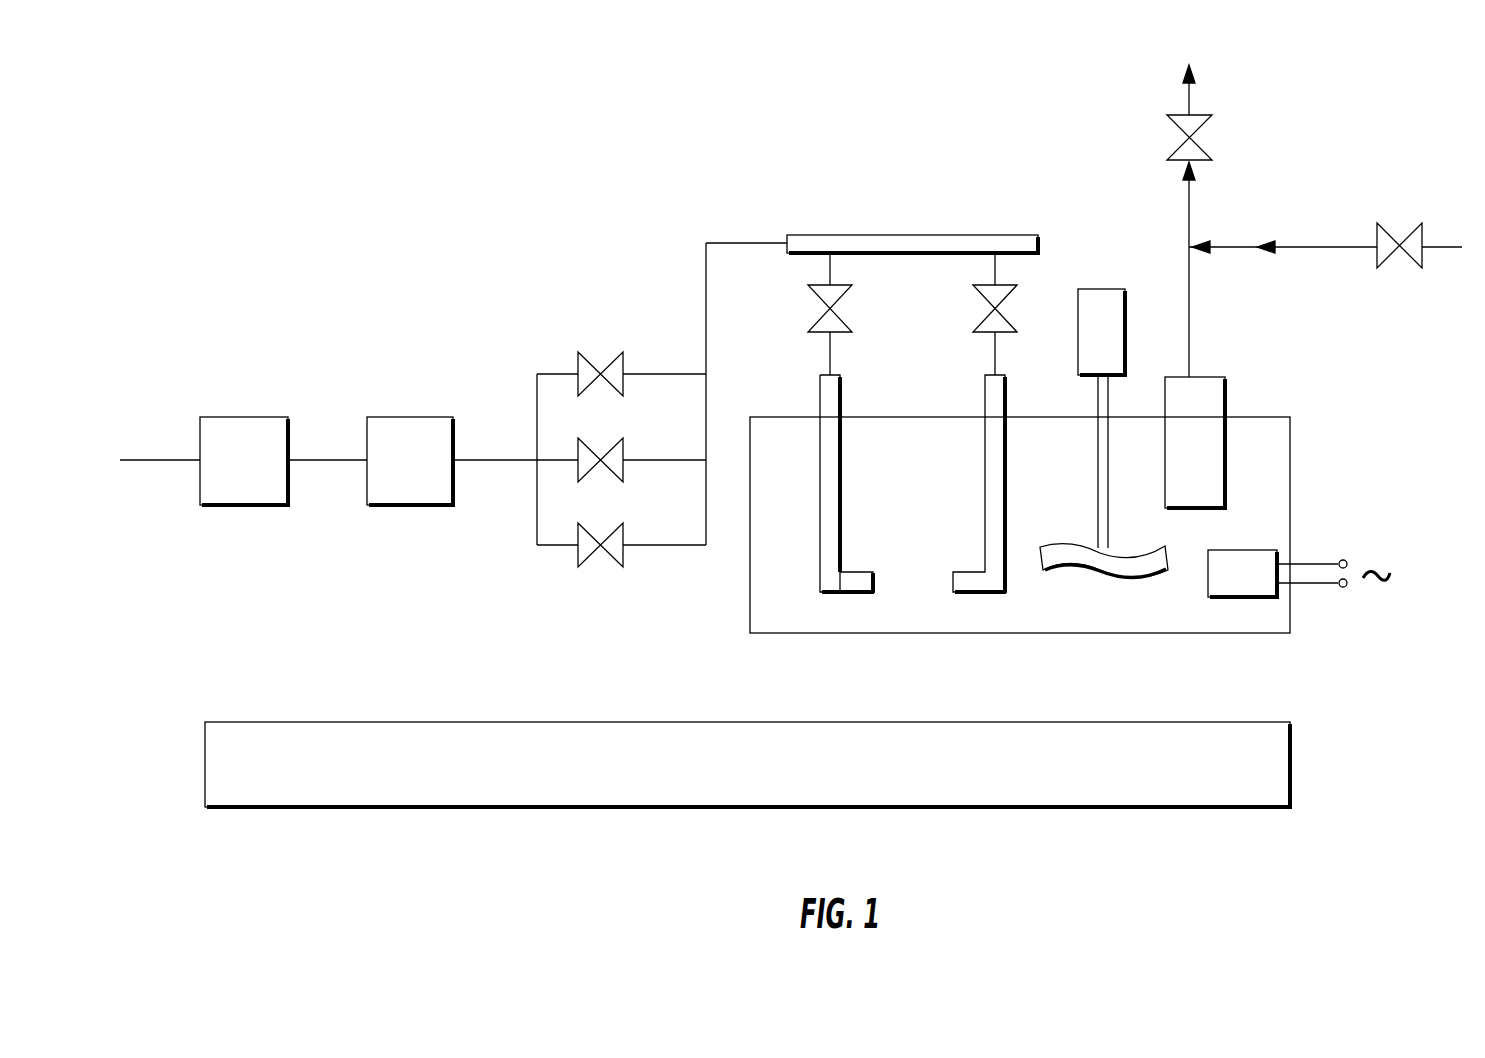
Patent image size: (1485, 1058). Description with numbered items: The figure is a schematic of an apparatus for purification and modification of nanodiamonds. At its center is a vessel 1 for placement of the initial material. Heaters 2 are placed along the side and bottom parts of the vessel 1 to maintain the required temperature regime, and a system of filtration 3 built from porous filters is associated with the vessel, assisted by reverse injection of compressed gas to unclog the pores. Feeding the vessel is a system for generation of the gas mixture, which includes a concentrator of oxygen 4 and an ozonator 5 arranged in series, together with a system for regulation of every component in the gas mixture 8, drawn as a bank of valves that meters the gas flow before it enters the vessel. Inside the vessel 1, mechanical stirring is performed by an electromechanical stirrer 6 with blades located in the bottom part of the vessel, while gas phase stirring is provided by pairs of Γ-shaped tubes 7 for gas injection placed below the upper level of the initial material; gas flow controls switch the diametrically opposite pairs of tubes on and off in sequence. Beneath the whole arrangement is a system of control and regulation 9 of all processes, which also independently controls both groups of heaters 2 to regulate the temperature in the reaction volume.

The vessel 1 is at (1278, 453).
The heater 2 is at (1262, 572).
The system of filtration 3 is at (1218, 405).
The concentrator of oxygen 4 is at (212, 488).
The ozonator 5 is at (384, 481).
The electromechanical stirrer 6 is at (1095, 563).
The Γ-shaped tubes 7 is at (975, 582).
The system for regulation of every component in the gas mixture 8 is at (557, 522).
The system of control and regulation 9 is at (596, 787).